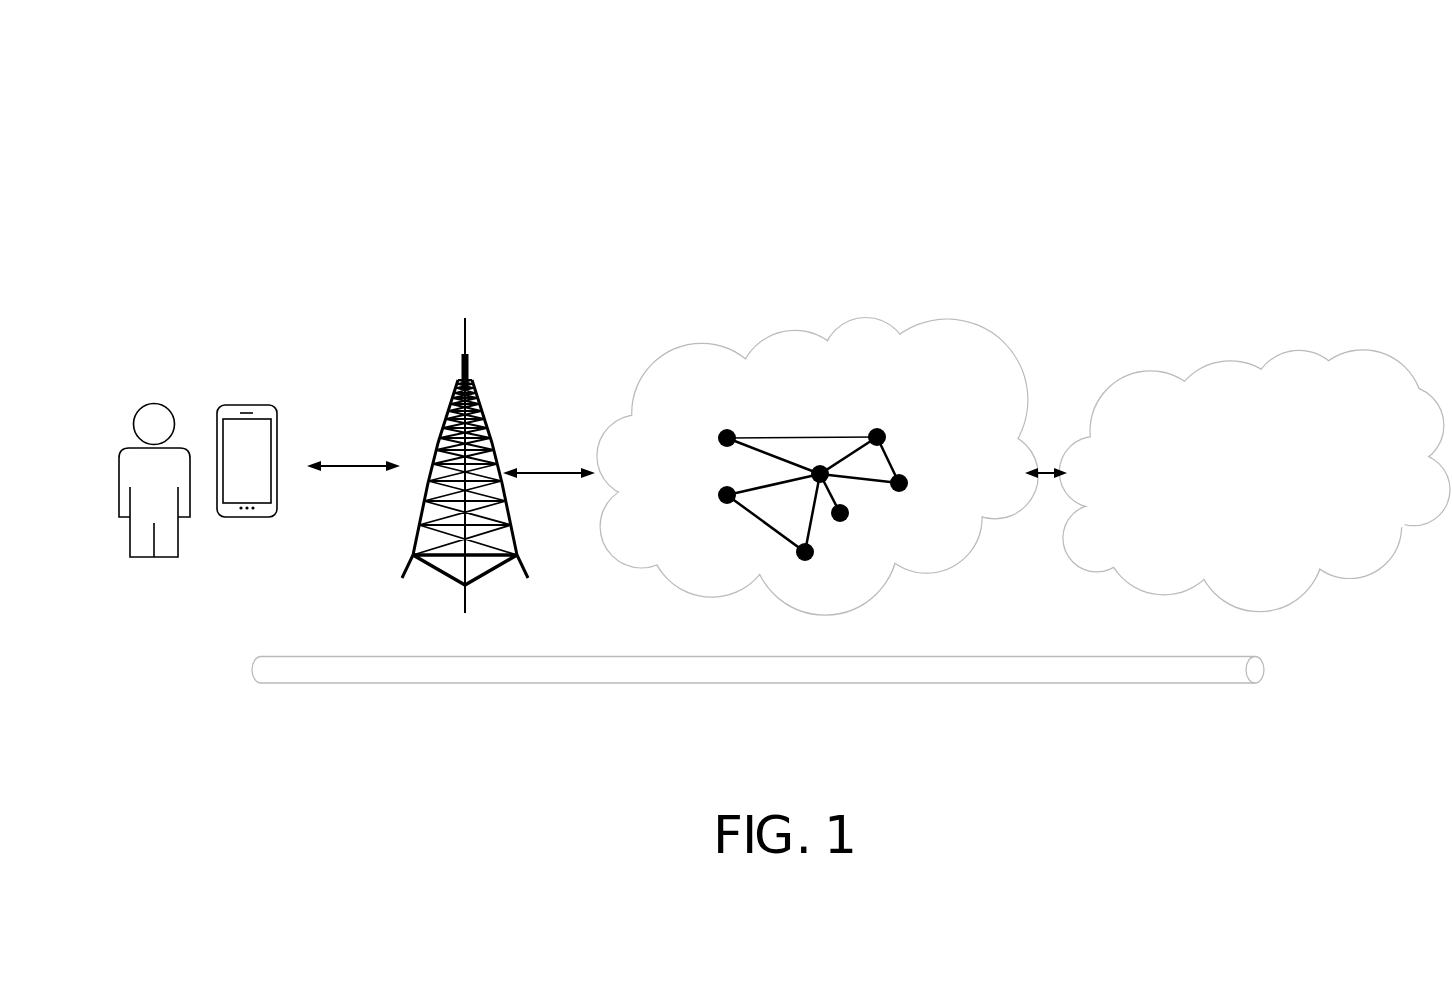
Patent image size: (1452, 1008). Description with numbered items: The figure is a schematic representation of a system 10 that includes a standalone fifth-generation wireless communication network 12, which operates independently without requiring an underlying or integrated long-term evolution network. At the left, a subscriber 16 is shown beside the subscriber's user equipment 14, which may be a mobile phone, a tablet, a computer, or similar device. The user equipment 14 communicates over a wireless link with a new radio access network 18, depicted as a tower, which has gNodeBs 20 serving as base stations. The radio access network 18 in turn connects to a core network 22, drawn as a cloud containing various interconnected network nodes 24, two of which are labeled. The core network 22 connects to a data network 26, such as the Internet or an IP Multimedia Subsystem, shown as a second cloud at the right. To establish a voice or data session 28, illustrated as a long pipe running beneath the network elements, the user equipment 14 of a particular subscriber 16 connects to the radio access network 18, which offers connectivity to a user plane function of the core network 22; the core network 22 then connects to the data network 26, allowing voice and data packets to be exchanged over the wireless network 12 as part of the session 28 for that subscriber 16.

The system 10 is at (455, 103).
The 5G wireless communication network 12 is at (632, 245).
The user equipment 14 is at (268, 405).
The subscriber 16 is at (119, 463).
The radio access network 18 is at (467, 465).
The gNodeB 20 is at (487, 448).
The core network 22 is at (818, 444).
The network node 24 is at (886, 434).
The data network 26 is at (1355, 351).
The voice or data session 28 is at (897, 683).